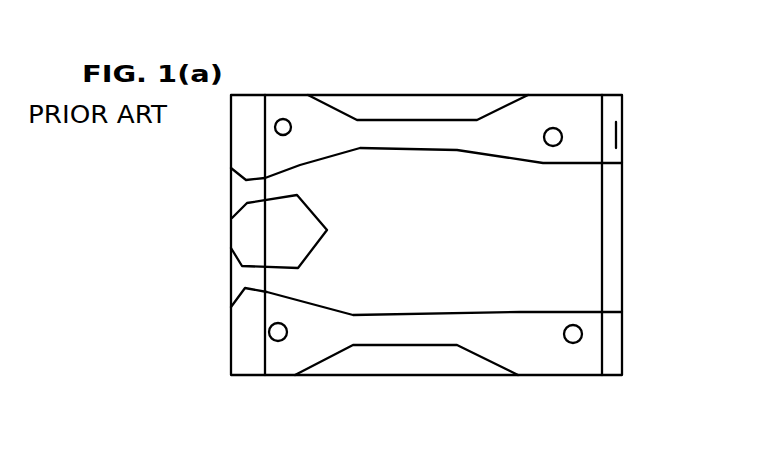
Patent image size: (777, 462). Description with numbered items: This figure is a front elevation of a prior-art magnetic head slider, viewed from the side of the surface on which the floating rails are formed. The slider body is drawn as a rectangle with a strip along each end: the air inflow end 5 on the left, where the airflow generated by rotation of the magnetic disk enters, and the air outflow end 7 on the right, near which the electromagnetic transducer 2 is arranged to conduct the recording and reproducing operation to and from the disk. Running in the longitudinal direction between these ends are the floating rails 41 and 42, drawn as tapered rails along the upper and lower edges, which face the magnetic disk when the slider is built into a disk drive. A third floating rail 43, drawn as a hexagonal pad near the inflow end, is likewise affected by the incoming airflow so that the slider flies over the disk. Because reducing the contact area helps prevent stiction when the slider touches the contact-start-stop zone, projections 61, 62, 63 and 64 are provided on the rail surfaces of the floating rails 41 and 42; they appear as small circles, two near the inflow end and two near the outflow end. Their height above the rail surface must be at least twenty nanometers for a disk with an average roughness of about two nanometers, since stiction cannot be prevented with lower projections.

The electromagnetic transducer 2 is at (622, 132).
The air inflow end 5 is at (231, 187).
The air outflow end 7 is at (623, 240).
The floating rail 41 is at (431, 132).
The floating rail 42 is at (438, 335).
The floating rail 43 is at (278, 229).
The projection 61 is at (285, 119).
The projection 62 is at (278, 341).
The projection 63 is at (558, 128).
The projection 64 is at (582, 333).